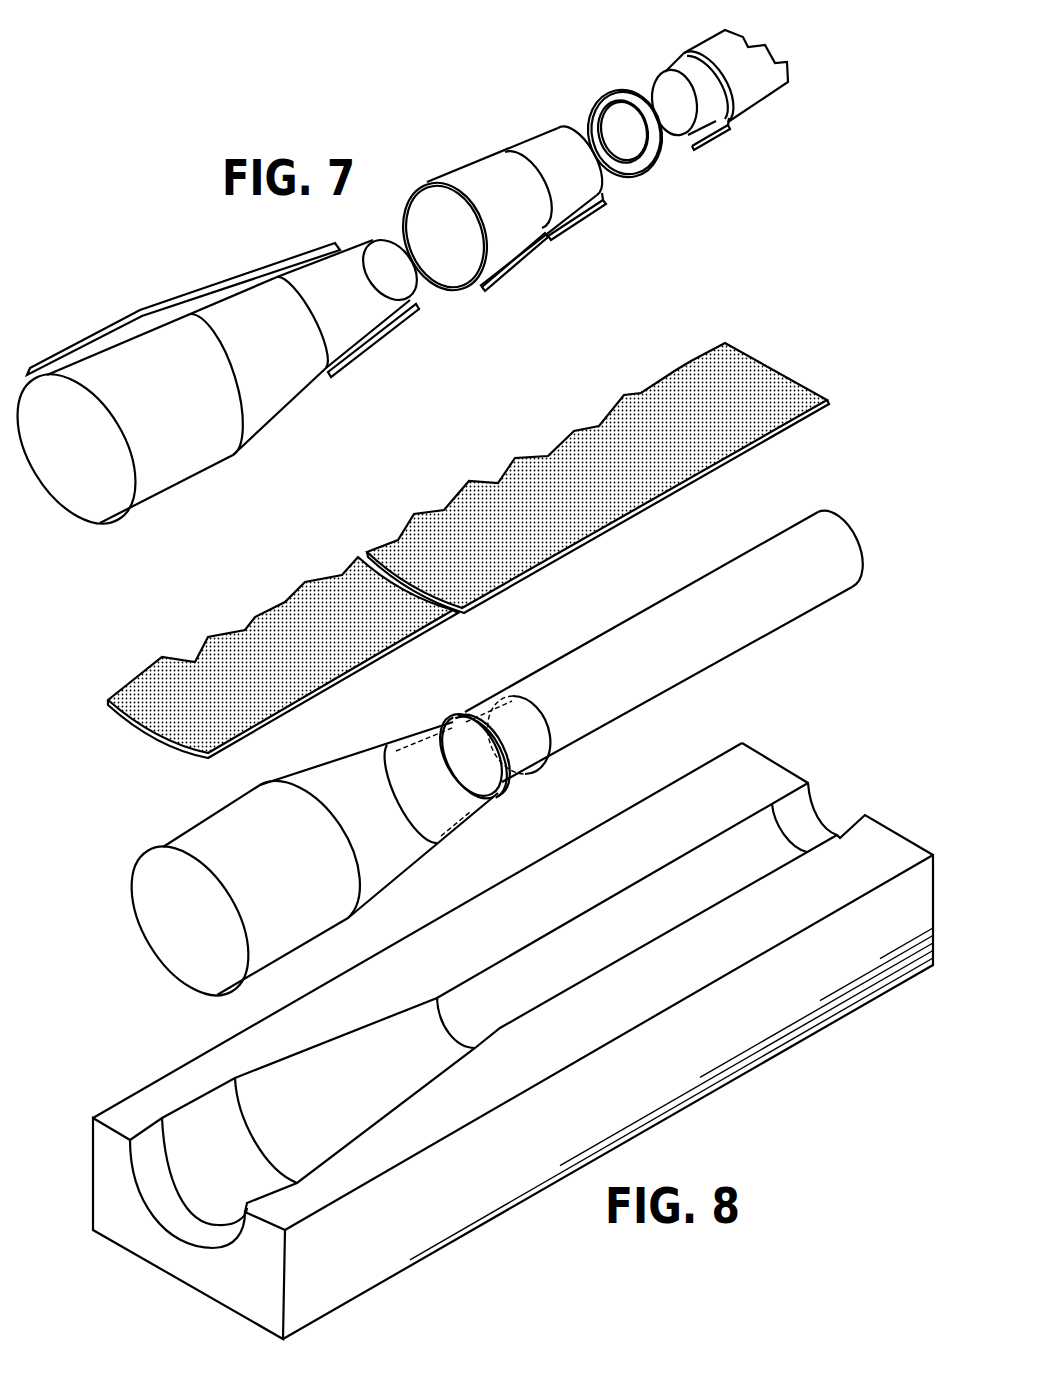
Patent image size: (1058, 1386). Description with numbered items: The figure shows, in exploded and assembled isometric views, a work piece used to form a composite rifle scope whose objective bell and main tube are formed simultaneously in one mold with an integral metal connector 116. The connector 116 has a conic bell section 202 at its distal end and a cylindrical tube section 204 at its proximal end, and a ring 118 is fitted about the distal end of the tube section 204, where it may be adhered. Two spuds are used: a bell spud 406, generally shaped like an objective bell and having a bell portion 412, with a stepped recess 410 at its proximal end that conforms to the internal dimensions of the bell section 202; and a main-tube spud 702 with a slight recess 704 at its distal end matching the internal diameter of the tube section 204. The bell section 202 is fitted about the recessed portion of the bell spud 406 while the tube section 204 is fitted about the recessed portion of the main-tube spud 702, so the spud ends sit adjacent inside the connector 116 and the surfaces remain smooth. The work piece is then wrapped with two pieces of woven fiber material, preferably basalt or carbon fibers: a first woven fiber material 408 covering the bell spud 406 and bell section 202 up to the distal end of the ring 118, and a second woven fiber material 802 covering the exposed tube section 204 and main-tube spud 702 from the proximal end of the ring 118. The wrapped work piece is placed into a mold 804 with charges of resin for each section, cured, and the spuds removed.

In FIG. 7, the connector 116 is at (475, 167).
In FIG. 8, the connector 116 is at (463, 820).
In FIG. 7, the ring 118 is at (603, 88).
In FIG. 8, the ring 118 is at (453, 717).
In FIG. 7, the conic bell section 202 is at (513, 265).
In FIG. 7, the cylindrical tube section 204 is at (578, 217).
In FIG. 7, the bell spud 406 is at (267, 427).
In FIG. 8, the bell spud 406 is at (207, 813).
In FIG. 8, the woven fiber material 408 is at (335, 688).
In FIG. 7, the stepped recess 410 is at (370, 338).
In FIG. 7, the bell portion 412 is at (135, 307).
In FIG. 7, the main-tube spud 702 is at (717, 140).
In FIG. 7, the slight recess 704 is at (757, 105).
In FIG. 8, the slight recess 704 is at (691, 678).
In FIG. 8, the woven fiber material 802 is at (641, 506).
In FIG. 8, the mold 804 is at (93, 1172).